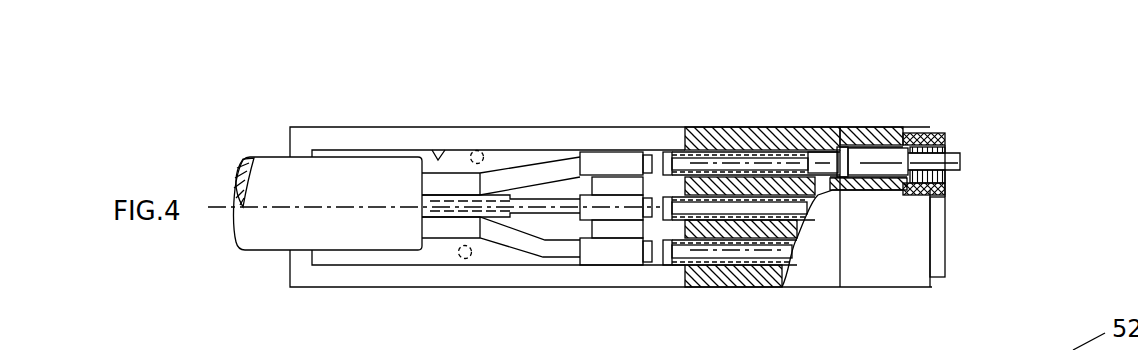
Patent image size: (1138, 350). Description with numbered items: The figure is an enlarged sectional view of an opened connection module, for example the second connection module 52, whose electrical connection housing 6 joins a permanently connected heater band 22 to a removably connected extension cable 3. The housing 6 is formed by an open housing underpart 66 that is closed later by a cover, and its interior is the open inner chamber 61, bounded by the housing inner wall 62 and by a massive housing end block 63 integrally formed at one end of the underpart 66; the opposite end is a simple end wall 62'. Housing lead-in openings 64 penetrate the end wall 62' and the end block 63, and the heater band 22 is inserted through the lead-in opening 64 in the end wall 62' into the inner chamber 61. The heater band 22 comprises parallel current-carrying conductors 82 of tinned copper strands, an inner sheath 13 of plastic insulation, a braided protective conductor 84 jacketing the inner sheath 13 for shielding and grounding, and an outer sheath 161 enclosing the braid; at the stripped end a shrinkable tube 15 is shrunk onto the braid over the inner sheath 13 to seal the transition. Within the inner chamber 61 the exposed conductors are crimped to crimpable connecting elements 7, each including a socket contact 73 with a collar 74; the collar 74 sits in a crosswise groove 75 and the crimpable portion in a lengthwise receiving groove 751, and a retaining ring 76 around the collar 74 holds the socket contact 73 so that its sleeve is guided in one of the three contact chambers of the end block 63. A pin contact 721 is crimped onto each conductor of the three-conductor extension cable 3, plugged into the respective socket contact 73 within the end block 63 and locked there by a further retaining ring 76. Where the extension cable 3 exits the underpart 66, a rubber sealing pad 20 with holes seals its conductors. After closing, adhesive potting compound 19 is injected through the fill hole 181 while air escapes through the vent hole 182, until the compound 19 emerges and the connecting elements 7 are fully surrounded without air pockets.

The extension cable 3 is at (983, 163).
The electrical connection housing 6 is at (315, 95).
The electrical connecting element 7 is at (580, 267).
The inner sheath 13 is at (430, 173).
The shrinkable tube 15 is at (441, 210).
The adhesive potting compound 19 is at (490, 225).
The rubber sealing pad 20 is at (925, 137).
The second heater band 22 is at (333, 230).
The second connection module 52 is at (990, 97).
The inner chamber 61 is at (323, 152).
The housing inner wall 62 is at (453, 124).
The end wall 62' is at (259, 119).
The massive housing end block 63 is at (790, 137).
The housing lead-in opening 64 is at (287, 155).
The housing underpart 66 is at (367, 134).
The socket contact 73 is at (612, 260).
The collar 74 is at (641, 225).
The crosswise groove 75 is at (650, 265).
The retaining ring 76 is at (638, 295).
The conductor 82 is at (495, 187).
The protective conductor 84 is at (480, 185).
The outer sheath 161 is at (285, 232).
The fill hole 181 is at (477, 258).
The vent hole 182 is at (479, 152).
The pin contact 721 is at (870, 153).
The lengthwise receiving groove 751 is at (610, 230).